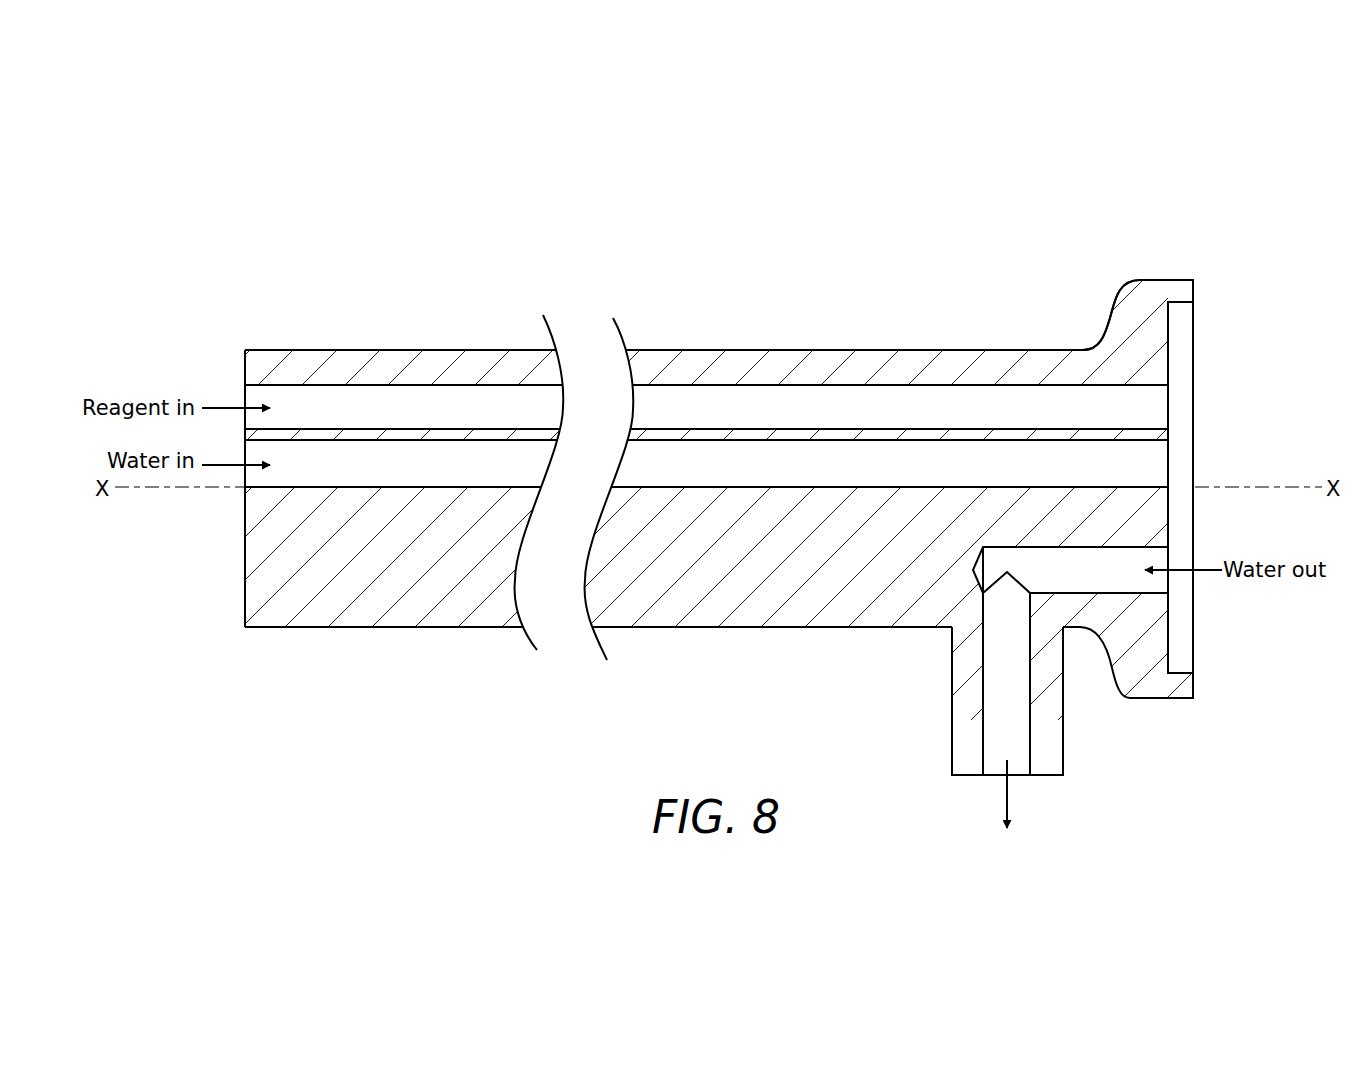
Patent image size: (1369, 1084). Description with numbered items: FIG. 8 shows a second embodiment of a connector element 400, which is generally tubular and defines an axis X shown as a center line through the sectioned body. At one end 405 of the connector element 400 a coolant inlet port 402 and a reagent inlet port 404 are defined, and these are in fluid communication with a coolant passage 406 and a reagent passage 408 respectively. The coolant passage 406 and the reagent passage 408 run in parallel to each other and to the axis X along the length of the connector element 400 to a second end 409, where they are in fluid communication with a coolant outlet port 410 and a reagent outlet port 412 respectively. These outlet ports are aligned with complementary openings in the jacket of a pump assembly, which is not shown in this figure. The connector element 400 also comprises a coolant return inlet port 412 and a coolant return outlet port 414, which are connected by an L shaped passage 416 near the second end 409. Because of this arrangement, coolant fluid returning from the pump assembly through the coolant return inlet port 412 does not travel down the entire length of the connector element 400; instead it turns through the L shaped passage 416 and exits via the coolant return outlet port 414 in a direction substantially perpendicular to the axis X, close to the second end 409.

The connector element 400 is at (894, 318).
The coolant inlet port 402 is at (245, 450).
The reagent inlet port 404 is at (245, 395).
The one end 405 is at (262, 293).
The coolant passage 406 is at (428, 457).
The reagent passage 408 is at (350, 398).
The second end 409 is at (1171, 259).
The coolant outlet port 410 is at (1170, 467).
The reagent outlet port 412 is at (1170, 410).
The coolant return outlet port 414 is at (990, 778).
The L shaped passage 416 is at (1100, 580).